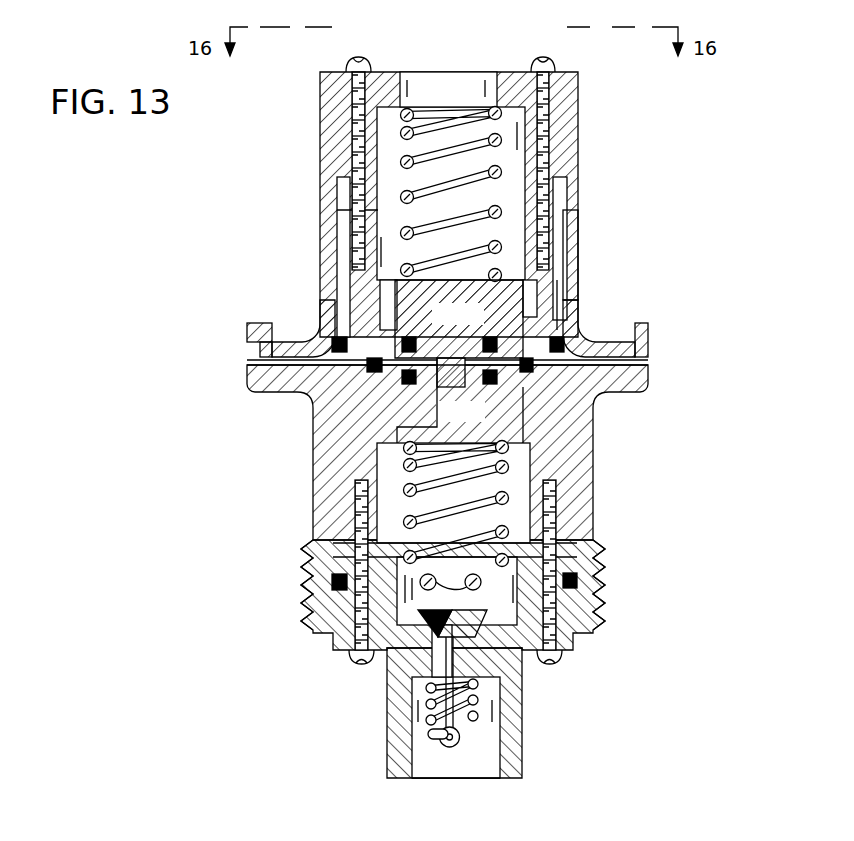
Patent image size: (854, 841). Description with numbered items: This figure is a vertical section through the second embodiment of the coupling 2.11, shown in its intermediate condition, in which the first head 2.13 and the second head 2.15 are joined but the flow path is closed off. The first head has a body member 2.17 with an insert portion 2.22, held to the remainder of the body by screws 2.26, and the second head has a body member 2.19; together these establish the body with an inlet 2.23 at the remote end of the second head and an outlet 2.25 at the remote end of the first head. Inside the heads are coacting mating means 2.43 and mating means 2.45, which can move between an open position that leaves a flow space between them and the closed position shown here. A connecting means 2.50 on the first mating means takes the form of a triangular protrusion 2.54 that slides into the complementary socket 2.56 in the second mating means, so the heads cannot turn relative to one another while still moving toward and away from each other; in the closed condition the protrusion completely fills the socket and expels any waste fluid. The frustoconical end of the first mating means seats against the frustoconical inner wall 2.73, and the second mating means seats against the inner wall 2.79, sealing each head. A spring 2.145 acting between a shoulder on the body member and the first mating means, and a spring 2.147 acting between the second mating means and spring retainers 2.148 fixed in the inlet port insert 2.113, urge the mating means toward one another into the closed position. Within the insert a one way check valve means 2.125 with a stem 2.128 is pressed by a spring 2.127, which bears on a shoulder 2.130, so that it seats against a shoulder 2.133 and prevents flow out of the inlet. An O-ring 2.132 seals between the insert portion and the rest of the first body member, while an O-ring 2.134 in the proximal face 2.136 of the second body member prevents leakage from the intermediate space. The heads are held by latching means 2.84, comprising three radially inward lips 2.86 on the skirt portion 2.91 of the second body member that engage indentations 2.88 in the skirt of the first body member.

The coupling 2.11 is at (748, 163).
The first head 2.13 is at (580, 181).
The second head 2.15 is at (597, 470).
The body member 2.17 is at (578, 232).
The body member 2.19 is at (584, 512).
The insert portion 2.22 is at (547, 297).
The inlet 2.23 is at (468, 786).
The outlet 2.25 is at (472, 33).
The screws 2.26 is at (365, 125).
The mating means 2.43 is at (397, 306).
The mating means 2.45 is at (397, 470).
The connecting means 2.50 is at (395, 414).
The protrusion 2.54 is at (449, 368).
The socket 2.56 is at (462, 400).
The inner wall 2.73 is at (397, 322).
The inner wall 2.79 is at (426, 394).
The latching means 2.84 is at (243, 318).
The lips 2.86 is at (255, 335).
The indentations 2.88 is at (262, 352).
The skirt portion 2.91 is at (650, 343).
The inlet port insert 2.113 is at (512, 715).
The check valve means 2.125 is at (430, 640).
The spring 2.127 is at (473, 724).
The stem 2.128 is at (455, 664).
The shoulder 2.130 is at (422, 705).
The O-ring 2.132 is at (562, 340).
The shoulder 2.133 is at (397, 622).
The O-ring 2.134 is at (535, 365).
The proximal face 2.136 is at (640, 357).
The spring 2.145 is at (467, 118).
The spring 2.147 is at (397, 478).
The spring retainers 2.148 is at (433, 583).